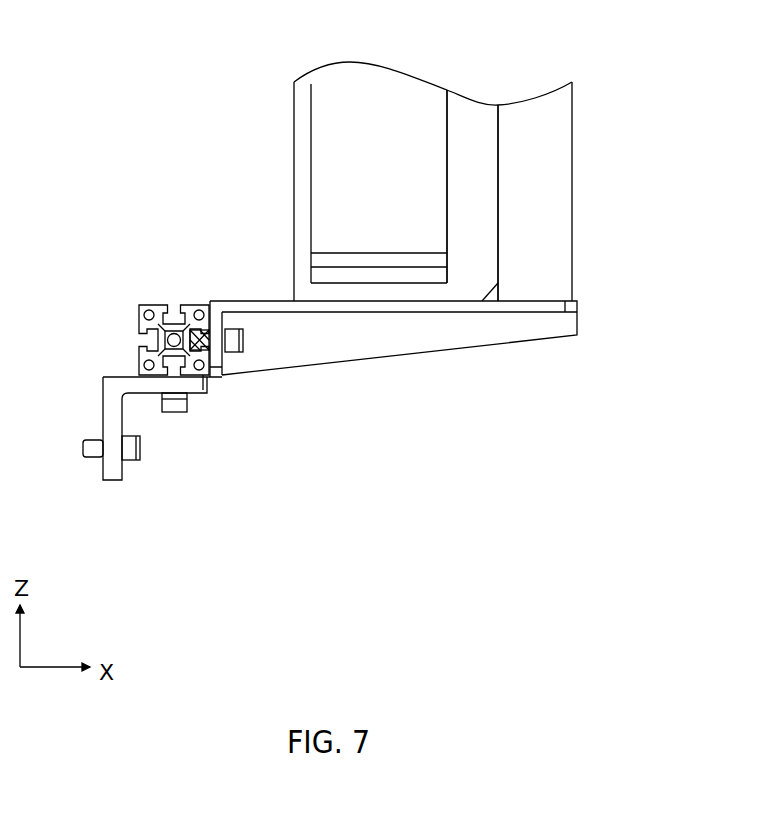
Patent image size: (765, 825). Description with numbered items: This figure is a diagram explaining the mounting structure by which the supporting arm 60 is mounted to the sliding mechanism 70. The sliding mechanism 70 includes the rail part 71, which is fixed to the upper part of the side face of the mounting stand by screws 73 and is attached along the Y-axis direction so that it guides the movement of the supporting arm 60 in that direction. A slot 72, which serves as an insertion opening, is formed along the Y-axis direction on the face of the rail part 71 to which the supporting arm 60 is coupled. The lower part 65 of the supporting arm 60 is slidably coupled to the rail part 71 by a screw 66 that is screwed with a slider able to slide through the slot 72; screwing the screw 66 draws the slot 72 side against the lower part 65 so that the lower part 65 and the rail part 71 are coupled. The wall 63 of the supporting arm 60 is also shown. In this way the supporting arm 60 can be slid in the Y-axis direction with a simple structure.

The supporting arm 60 is at (555, 207).
The inner wall of housing 63 is at (463, 112).
The lower part 65 is at (285, 355).
The screw 66 is at (230, 357).
The sliding mechanism 70 is at (102, 330).
The rail part 71 is at (156, 305).
The slot 72 is at (193, 305).
The screws 73 is at (140, 460).